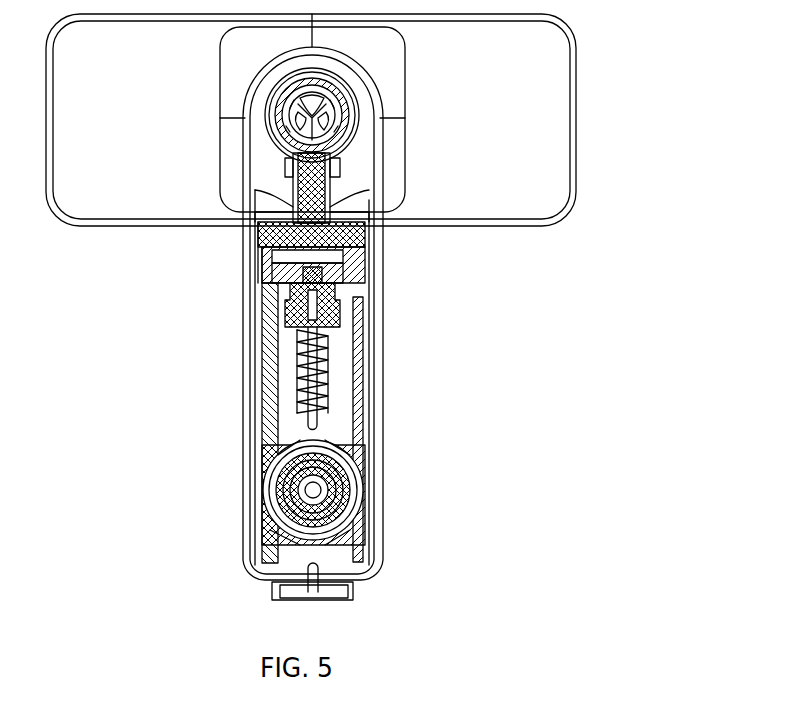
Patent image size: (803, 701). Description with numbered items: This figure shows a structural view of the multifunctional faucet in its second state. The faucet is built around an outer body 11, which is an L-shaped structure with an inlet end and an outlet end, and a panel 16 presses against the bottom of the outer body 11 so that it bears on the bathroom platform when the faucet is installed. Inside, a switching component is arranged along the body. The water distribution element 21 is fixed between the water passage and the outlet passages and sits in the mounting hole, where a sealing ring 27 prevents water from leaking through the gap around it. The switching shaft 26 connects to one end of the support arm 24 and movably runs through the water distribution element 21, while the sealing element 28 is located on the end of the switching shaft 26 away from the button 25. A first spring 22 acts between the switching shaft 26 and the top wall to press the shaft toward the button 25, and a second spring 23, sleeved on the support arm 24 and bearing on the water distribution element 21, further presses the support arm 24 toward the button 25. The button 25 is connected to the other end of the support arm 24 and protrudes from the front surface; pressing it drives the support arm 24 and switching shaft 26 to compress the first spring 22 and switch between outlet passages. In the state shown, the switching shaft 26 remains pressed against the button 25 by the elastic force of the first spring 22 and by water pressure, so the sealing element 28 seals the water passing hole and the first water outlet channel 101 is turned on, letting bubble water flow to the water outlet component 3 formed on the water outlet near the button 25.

The panel 16 is at (557, 137).
The first water outlet channel 101 is at (383, 233).
The water outlet component 3 is at (345, 541).
The sealing element 28 is at (262, 245).
The sealing ring 27 is at (270, 290).
The second spring 23 is at (270, 341).
The support arm 24 is at (300, 398).
The first spring 22 is at (352, 266).
The switching shaft 26 is at (340, 302).
The water distribution element 21 is at (335, 386).
The outer body 11 is at (383, 480).
The button 25 is at (270, 587).